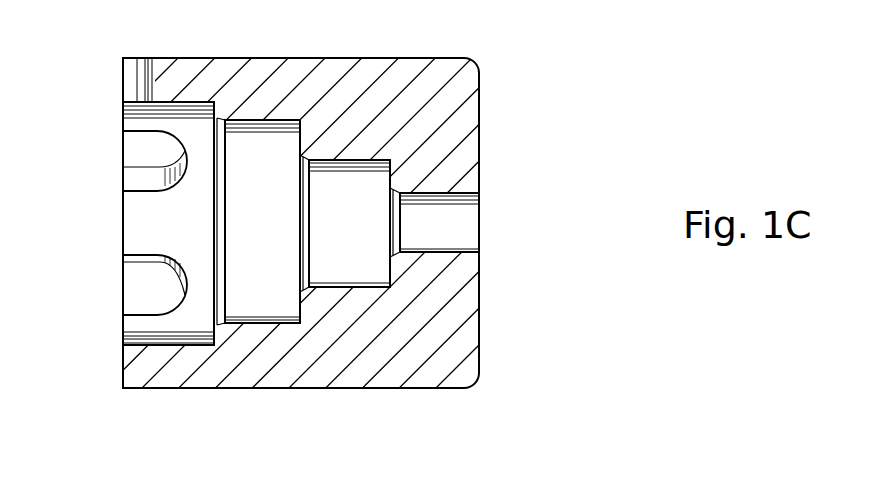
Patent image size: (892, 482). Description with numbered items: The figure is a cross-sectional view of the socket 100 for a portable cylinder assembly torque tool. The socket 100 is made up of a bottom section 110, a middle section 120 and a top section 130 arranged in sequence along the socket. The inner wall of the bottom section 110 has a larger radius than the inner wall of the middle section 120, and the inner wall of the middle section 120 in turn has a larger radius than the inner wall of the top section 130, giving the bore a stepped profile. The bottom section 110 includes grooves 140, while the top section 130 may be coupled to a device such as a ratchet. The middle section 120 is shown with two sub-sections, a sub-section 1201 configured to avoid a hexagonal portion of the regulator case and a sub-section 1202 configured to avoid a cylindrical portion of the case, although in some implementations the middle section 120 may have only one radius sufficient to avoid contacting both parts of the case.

The socket 100 is at (502, 100).
The bottom section 110 is at (140, 217).
The middle section 120 is at (288, 232).
The sub-section 1201 is at (263, 292).
The sub-section 1202 is at (332, 262).
The top section 130 is at (447, 225).
The grooves 140 is at (140, 176).